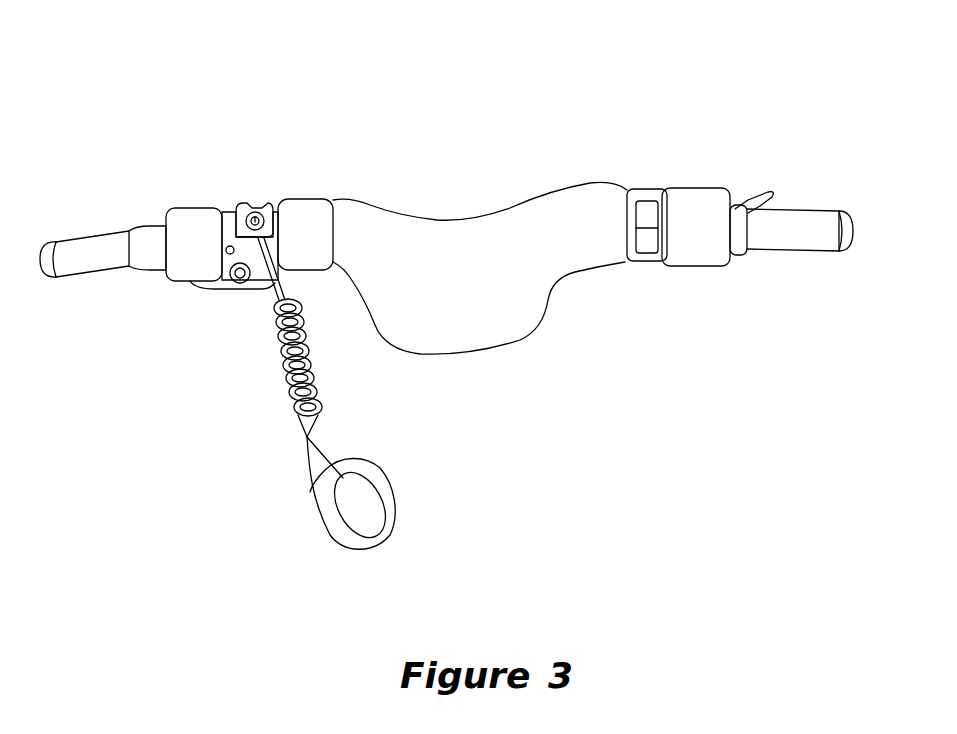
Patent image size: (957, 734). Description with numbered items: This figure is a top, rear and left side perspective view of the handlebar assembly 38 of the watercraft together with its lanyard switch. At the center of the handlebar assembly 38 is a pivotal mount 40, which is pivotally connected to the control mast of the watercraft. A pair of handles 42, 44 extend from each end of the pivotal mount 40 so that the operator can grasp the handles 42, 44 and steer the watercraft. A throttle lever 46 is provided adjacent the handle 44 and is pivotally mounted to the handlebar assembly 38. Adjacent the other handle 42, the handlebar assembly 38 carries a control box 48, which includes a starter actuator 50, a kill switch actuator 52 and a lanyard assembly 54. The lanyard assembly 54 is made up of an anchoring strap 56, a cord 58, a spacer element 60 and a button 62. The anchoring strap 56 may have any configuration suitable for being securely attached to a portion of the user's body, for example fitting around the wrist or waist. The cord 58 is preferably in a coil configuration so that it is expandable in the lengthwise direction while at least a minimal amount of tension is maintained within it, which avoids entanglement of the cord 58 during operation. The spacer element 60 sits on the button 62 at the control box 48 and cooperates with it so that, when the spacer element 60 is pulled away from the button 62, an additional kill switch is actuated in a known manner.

The handlebar assembly 38 is at (692, 70).
The pivotal mount 40 is at (450, 238).
The handle 42 is at (80, 262).
The handle 44 is at (793, 237).
The throttle lever 46 is at (752, 197).
The control box 48 is at (252, 100).
The starter actuator 50 is at (228, 248).
The kill switch actuator 52 is at (240, 285).
The lanyard assembly 54 is at (432, 437).
The anchoring strap 56 is at (385, 490).
The cord 58 is at (320, 377).
The spacer element 60 is at (271, 206).
The button 62 is at (253, 211).